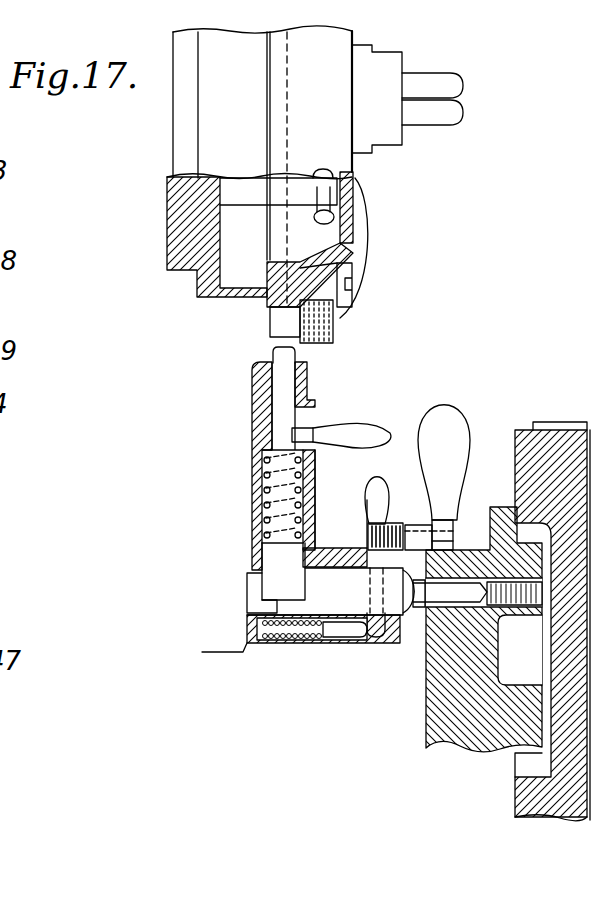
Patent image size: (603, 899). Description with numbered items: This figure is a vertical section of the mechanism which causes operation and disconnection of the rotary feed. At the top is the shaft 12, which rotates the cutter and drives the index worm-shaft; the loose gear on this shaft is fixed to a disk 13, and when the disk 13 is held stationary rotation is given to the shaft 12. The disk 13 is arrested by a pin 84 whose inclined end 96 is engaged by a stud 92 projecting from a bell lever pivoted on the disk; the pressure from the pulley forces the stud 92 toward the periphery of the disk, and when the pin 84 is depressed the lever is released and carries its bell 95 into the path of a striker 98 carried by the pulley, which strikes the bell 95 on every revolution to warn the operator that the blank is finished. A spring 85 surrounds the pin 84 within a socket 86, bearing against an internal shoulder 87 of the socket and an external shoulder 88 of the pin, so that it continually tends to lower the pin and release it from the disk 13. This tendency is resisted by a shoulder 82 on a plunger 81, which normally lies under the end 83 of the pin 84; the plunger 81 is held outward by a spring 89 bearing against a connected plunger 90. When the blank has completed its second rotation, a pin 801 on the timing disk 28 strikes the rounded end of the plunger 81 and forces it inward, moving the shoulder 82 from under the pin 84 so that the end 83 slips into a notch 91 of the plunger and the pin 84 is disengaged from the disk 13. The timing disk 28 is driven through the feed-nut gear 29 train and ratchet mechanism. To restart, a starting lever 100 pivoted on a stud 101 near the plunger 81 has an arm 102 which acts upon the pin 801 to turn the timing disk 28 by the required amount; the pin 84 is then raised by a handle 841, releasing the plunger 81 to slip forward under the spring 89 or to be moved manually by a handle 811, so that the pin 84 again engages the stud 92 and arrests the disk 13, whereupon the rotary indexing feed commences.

The shaft 12 is at (390, 82).
The disk 13 is at (354, 178).
The timing disk 28 is at (478, 660).
The feed-nut gear 29 is at (528, 450).
The plunger 81 is at (413, 523).
The shoulder 82 is at (262, 578).
The end of pin 83 is at (283, 585).
The pin 84 is at (280, 390).
The spring 85 is at (252, 486).
The socket 86 is at (255, 462).
The internal shoulder 87 is at (270, 450).
The external shoulder 88 is at (263, 540).
The spring 89 is at (306, 636).
The plunger 90 is at (354, 630).
The notch 91 is at (308, 594).
The stud 92 is at (280, 323).
The bell 95 is at (359, 226).
The inclined end 96 is at (292, 355).
The striker 98 is at (314, 215).
The starting lever 100 is at (427, 442).
The stud 101 is at (453, 587).
The arm 102 is at (422, 607).
The pin 801 is at (455, 524).
The handle 811 is at (366, 492).
The handle 841 is at (345, 428).